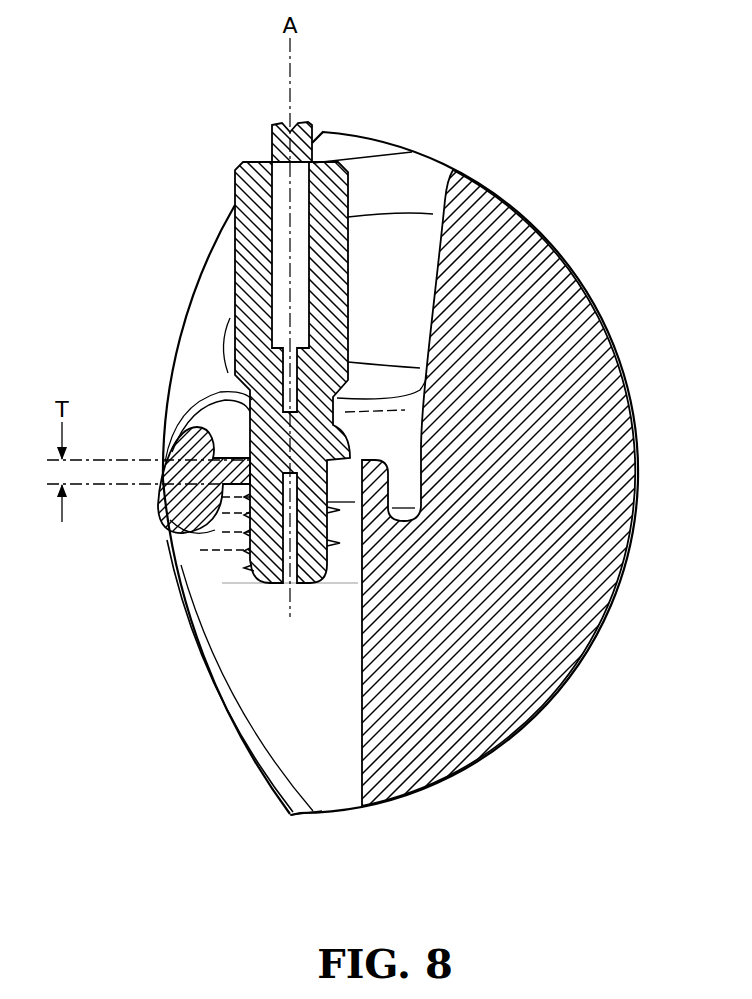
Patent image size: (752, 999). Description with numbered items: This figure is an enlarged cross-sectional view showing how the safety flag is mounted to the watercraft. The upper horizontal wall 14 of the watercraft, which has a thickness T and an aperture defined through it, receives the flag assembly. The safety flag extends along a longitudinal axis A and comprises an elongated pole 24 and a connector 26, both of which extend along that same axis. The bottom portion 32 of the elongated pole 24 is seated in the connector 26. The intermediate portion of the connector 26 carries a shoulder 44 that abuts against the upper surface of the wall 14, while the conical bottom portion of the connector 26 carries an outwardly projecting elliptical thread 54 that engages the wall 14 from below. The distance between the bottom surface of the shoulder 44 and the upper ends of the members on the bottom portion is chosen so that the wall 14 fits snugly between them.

The upper horizontal wall 14 is at (222, 478).
The elongated pole 24 is at (327, 124).
The connector 26 is at (330, 197).
The bottom portion 32 is at (283, 243).
The shoulder 44 is at (240, 440).
The elliptical thread 54 is at (250, 567).